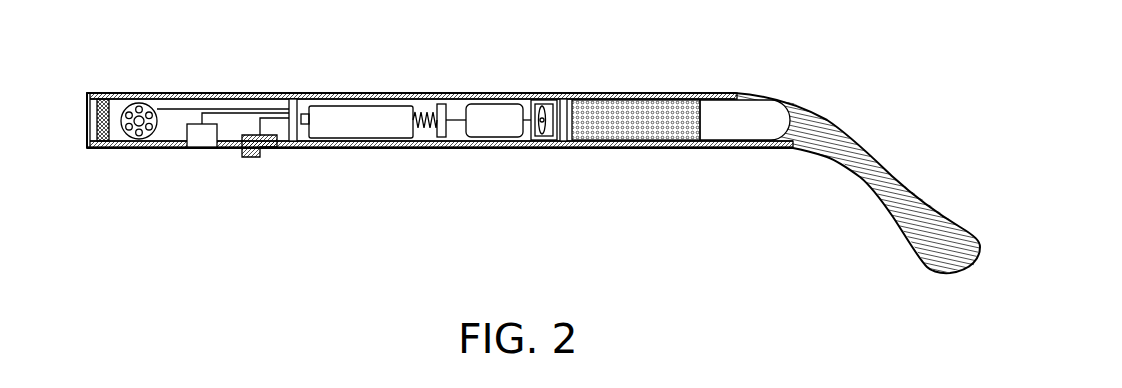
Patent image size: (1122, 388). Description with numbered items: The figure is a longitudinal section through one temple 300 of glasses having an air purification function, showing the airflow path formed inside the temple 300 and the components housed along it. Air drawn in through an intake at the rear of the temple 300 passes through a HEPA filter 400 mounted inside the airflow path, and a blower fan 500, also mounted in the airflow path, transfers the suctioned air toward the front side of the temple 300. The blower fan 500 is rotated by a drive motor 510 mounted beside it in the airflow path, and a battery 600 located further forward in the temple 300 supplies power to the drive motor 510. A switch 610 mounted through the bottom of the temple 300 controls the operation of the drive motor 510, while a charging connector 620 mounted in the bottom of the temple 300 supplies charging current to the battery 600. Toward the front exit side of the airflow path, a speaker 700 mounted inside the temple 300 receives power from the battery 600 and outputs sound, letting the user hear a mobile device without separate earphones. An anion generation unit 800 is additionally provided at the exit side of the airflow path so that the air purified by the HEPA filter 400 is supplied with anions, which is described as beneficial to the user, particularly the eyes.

The temple 300 is at (453, 93).
The HEPA filter 400 is at (640, 132).
The blower fan 500 is at (553, 132).
The drive motor 510 is at (493, 132).
The battery 600 is at (353, 132).
The switch 610 is at (248, 158).
The charging connector 620 is at (203, 145).
The speaker 700 is at (148, 103).
The anion generation unit 800 is at (103, 100).